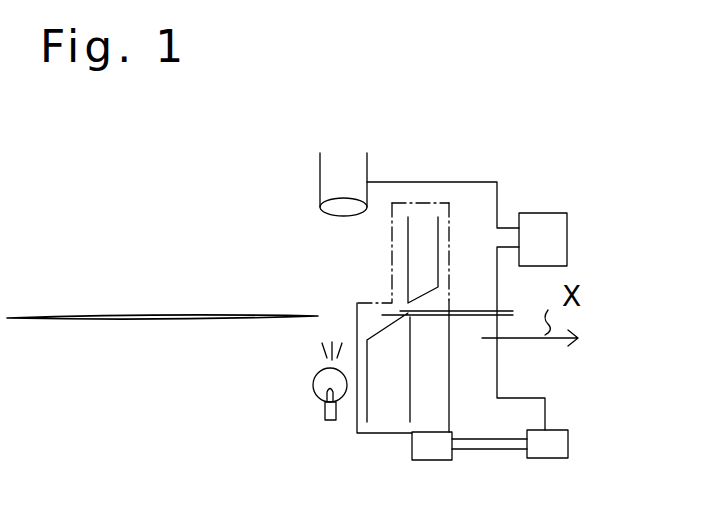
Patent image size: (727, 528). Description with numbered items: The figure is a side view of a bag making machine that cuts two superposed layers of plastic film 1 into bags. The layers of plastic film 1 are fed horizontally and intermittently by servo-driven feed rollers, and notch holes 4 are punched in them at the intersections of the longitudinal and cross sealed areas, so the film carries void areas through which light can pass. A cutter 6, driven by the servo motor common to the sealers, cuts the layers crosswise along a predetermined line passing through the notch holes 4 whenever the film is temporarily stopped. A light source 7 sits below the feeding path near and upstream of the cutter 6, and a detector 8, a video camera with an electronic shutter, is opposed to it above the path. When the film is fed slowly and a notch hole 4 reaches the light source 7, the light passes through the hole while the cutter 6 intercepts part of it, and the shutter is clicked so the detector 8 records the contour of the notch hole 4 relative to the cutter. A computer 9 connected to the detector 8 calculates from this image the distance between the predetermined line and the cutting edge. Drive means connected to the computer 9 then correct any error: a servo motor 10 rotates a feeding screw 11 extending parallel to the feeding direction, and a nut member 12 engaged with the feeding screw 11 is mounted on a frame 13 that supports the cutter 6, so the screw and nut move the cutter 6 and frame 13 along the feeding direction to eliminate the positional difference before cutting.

The plastic film 1 is at (161, 315).
The notch hole 4 is at (338, 315).
The cutter 6 is at (423, 243).
The light source 7 is at (311, 385).
The detector 8 is at (325, 173).
The computer 9 is at (560, 245).
The servo motor 10 is at (560, 445).
The feeding screw 11 is at (504, 450).
The nut member 12 is at (433, 448).
The frame 13 is at (473, 367).